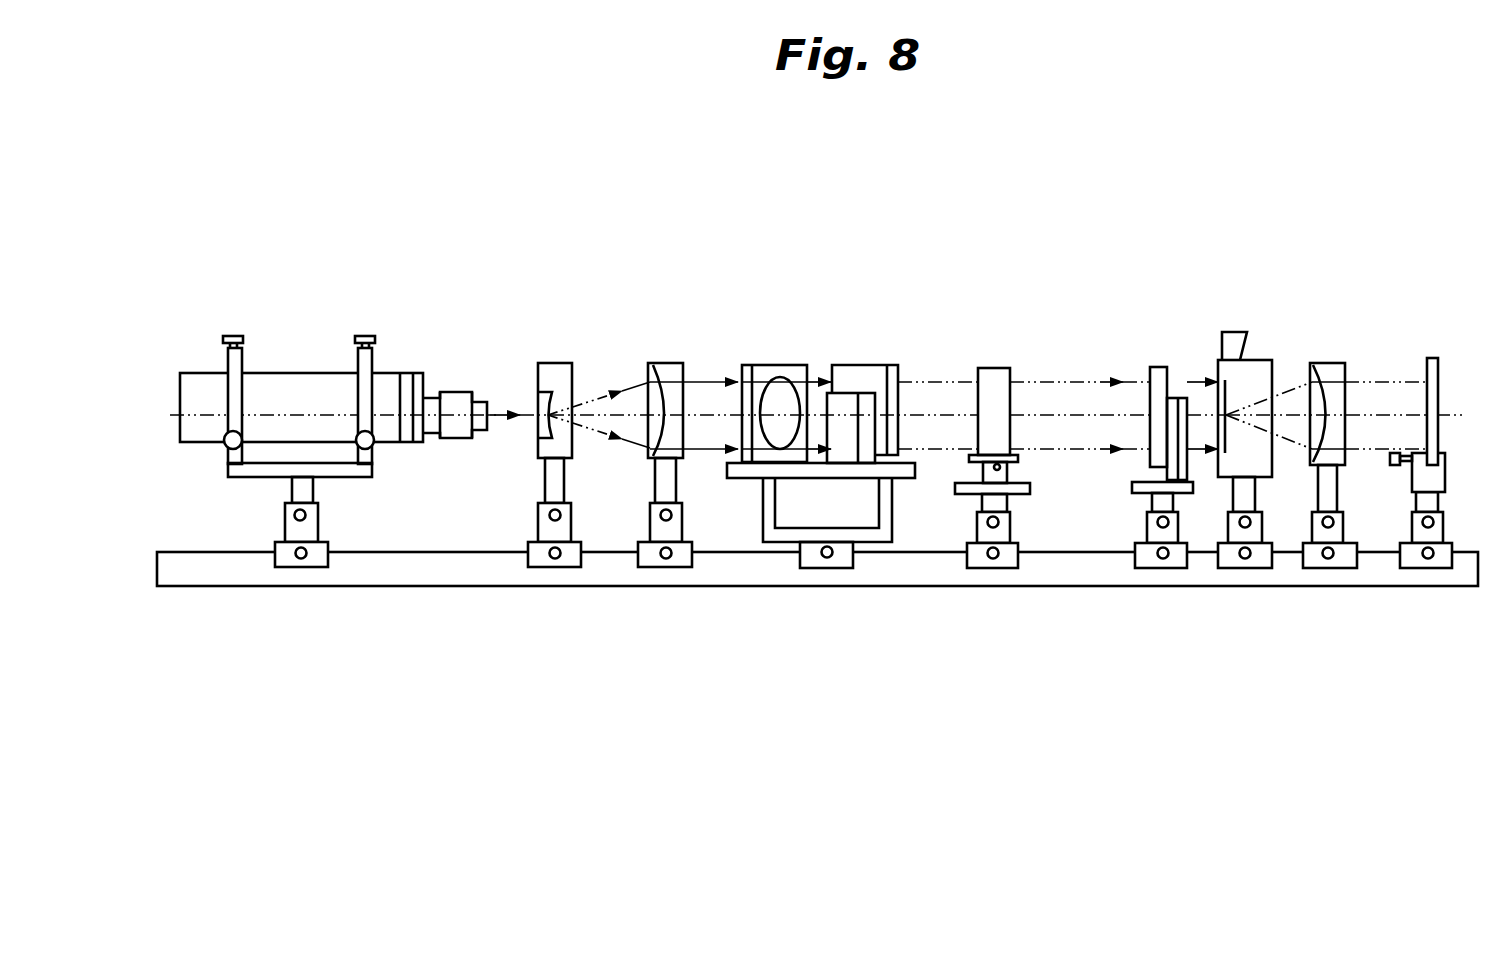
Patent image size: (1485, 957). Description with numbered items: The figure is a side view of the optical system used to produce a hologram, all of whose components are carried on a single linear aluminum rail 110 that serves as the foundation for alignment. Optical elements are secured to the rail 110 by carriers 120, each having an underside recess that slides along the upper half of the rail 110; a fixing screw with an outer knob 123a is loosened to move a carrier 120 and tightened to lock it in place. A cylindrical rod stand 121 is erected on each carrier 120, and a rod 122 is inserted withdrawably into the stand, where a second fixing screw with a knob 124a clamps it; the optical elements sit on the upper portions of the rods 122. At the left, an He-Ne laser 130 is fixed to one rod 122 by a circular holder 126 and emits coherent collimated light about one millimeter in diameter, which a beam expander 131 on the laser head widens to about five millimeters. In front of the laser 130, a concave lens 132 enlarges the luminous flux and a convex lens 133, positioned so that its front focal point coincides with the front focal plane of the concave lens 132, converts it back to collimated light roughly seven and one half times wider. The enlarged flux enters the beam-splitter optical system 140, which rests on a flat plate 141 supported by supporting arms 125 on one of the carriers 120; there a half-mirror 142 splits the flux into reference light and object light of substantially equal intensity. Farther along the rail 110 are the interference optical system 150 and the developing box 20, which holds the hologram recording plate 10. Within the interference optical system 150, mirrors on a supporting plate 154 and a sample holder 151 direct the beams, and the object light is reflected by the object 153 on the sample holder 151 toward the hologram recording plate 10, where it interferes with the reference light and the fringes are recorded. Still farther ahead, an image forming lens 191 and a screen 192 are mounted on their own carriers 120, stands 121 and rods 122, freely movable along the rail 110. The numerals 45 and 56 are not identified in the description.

The hologram recording plate 10 is at (1228, 400).
The developing box 20 is at (1243, 357).
The optical block 45 is at (872, 365).
The mask plate 56 is at (1160, 367).
The rail 110 is at (430, 575).
The carrier 120 is at (288, 565).
The rod stand 121 is at (313, 528).
The rod 122 is at (308, 492).
The knob 123a is at (303, 560).
The knob 124a is at (292, 515).
The supporting arms 125 is at (880, 520).
The circular holder 126 is at (228, 395).
The He-Ne laser 130 is at (292, 385).
The beam expander 131 is at (455, 395).
The concave lens 132 is at (555, 375).
The convex lens 133 is at (665, 375).
The beam-splitter optical system 140 is at (831, 404).
The flat plate 141 is at (745, 480).
The half-mirror 142 is at (765, 365).
The interference optical system 150 is at (1025, 387).
The sample holder 151 is at (1028, 488).
The object 153 is at (1005, 372).
The supporting plate 154 is at (1145, 490).
The image forming lens 191 is at (1335, 365).
The screen 192 is at (1435, 358).